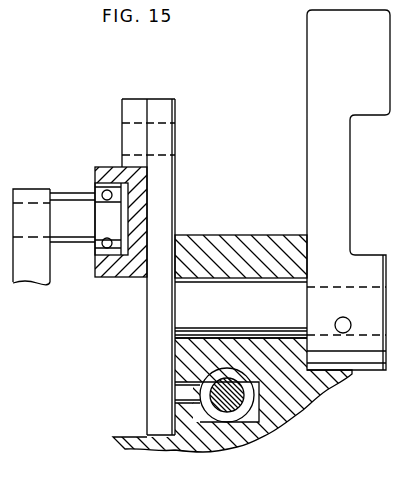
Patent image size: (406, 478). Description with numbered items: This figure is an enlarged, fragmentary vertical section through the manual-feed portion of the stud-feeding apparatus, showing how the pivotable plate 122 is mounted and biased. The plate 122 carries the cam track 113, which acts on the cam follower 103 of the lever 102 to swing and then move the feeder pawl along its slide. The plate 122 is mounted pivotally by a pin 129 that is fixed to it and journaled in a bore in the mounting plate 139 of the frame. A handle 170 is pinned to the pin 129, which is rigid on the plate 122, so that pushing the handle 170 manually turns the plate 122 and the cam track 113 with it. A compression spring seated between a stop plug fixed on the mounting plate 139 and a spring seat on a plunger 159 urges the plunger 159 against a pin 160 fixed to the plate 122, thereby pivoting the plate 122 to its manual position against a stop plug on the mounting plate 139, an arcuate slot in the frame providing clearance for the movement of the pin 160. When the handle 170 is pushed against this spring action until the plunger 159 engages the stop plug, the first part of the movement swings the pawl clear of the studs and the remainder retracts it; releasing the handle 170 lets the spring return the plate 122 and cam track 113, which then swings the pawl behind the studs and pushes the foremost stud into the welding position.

The lever 102 is at (43, 279).
The cam follower 103 is at (95, 184).
The cam track 113 is at (101, 165).
The plate 122 is at (163, 180).
The pin 129 is at (187, 315).
The mounting plate 139 is at (221, 240).
The plunger 159 is at (242, 400).
The pin 160 is at (177, 392).
The handle 170 is at (313, 147).